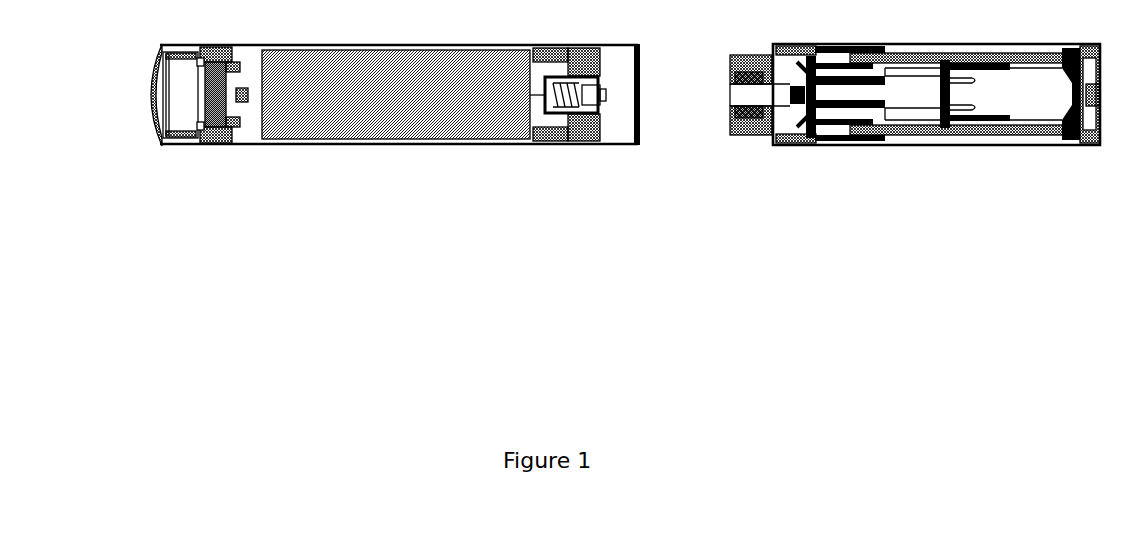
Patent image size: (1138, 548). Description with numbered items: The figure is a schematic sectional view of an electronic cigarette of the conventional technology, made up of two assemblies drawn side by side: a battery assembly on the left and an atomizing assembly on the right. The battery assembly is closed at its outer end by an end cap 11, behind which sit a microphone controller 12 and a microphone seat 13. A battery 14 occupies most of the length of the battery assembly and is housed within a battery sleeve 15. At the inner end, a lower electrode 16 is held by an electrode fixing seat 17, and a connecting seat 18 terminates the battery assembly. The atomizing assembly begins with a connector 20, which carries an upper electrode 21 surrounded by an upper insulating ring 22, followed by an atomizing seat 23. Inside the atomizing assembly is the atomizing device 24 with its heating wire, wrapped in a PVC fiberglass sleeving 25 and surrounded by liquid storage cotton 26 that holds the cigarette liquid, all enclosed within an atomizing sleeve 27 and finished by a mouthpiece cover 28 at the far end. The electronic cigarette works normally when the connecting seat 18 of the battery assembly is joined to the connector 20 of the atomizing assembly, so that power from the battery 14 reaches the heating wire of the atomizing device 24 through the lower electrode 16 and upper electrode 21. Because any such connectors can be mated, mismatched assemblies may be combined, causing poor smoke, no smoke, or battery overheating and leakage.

The end cap 11 is at (158, 146).
The microphone controller 12 is at (200, 146).
The microphone seat 13 is at (228, 146).
The battery 14 is at (318, 126).
The battery sleeve 15 is at (390, 144).
The lower electrode 16 is at (560, 113).
The electrode fixing seat 17 is at (567, 141).
The connecting seat 18 is at (637, 146).
The connector 20 is at (740, 135).
The upper electrode 21 is at (745, 135).
The upper insulating ring 22 is at (774, 141).
The atomizing seat 23 is at (820, 141).
The atomizing device 24 is at (945, 128).
The PVC fiberglass sleeving 25 is at (975, 128).
The liquid storage cotton 26 is at (1000, 135).
The atomizing sleeve 27 is at (1030, 143).
The mouthpiece cover 28 is at (1075, 138).